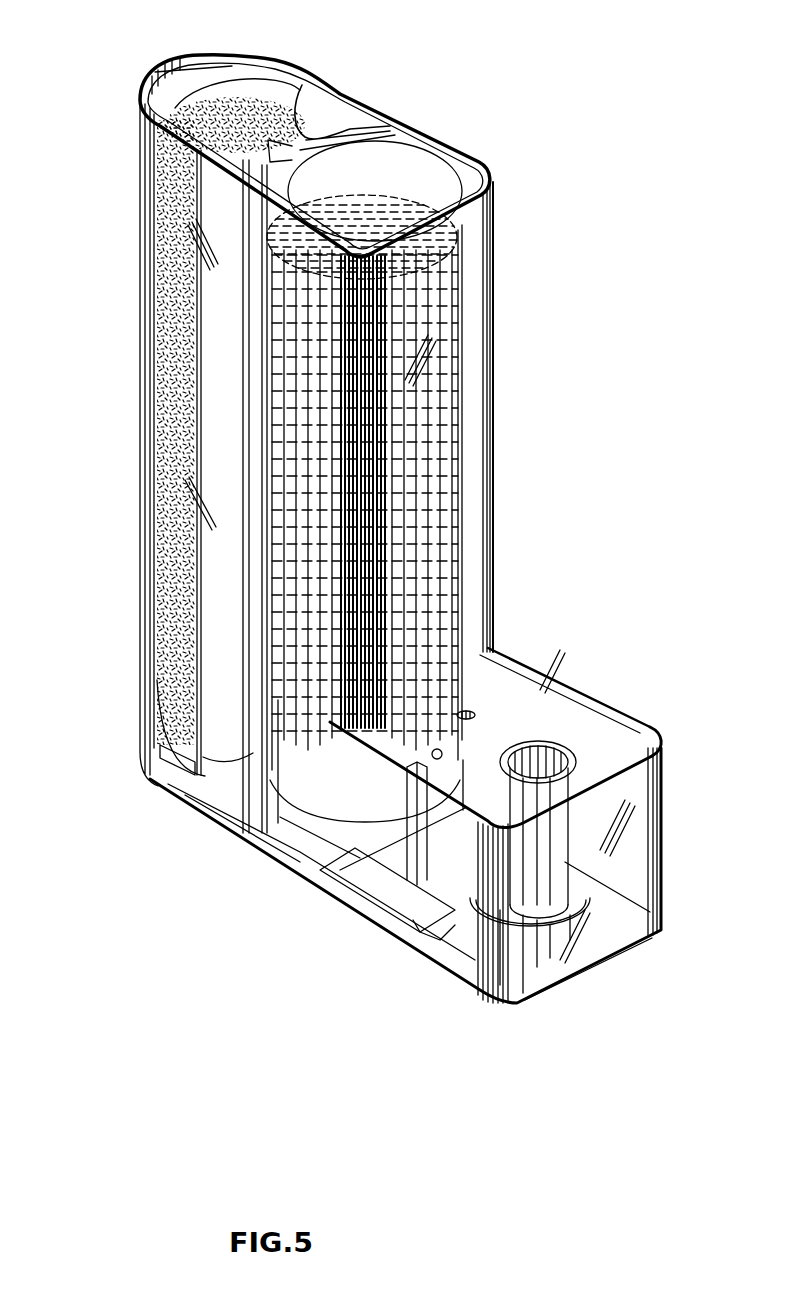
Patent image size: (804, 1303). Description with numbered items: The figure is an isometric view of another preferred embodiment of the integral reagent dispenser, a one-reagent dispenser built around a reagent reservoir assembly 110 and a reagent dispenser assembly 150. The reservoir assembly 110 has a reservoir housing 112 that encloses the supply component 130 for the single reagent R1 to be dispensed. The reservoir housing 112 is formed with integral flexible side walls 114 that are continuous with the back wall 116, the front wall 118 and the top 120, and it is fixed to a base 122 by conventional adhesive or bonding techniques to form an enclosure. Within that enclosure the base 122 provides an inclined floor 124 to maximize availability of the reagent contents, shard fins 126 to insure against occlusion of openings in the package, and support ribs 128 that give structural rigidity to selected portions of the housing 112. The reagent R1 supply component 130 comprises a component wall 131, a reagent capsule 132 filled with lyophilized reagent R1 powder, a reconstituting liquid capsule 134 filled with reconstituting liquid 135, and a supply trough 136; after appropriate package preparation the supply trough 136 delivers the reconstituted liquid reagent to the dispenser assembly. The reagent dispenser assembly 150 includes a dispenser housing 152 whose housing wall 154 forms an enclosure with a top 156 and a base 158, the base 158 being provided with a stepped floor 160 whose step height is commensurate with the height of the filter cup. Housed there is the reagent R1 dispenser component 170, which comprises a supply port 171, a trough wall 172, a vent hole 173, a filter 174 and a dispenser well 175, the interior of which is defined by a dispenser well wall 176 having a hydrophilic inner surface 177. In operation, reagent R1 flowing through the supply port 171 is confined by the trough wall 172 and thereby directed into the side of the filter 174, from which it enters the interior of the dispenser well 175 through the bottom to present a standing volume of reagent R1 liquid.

The reagent reservoir assembly 110 is at (128, 57).
The reservoir housing 112 is at (143, 206).
The flexible side walls 114 is at (467, 177).
The back wall 116 is at (166, 62).
The front wall 118 is at (477, 239).
The top 120 is at (353, 164).
The base 122 is at (206, 800).
The inclined floor 124 is at (395, 856).
The shard fins 126 is at (281, 852).
The support ribs 128 is at (318, 90).
The reagent R1 supply component 130 is at (482, 176).
The component wall 131 is at (392, 122).
The reagent R1 capsule 132 is at (250, 70).
The reconstituting liquid capsule 134 is at (412, 156).
The reconstituting liquid 135 is at (440, 317).
The supply trough 136 is at (418, 800).
The reagent dispenser assembly 150 is at (547, 620).
The dispenser housing 152 is at (676, 667).
The housing wall 154 is at (660, 786).
The top 156 is at (545, 666).
The base 158 is at (507, 1000).
The stepped floor 160 is at (440, 936).
The reagent R1 dispenser component 170 is at (569, 858).
The supply port 171 is at (436, 748).
The trough wall 172 is at (434, 847).
The vent hole 173 is at (468, 708).
The filter 174 is at (578, 912).
The dispenser well 175 is at (552, 712).
The dispenser well wall 176 is at (575, 744).
The hydrophilic inner surface 177 is at (512, 746).
The reagent R1 is at (170, 404).